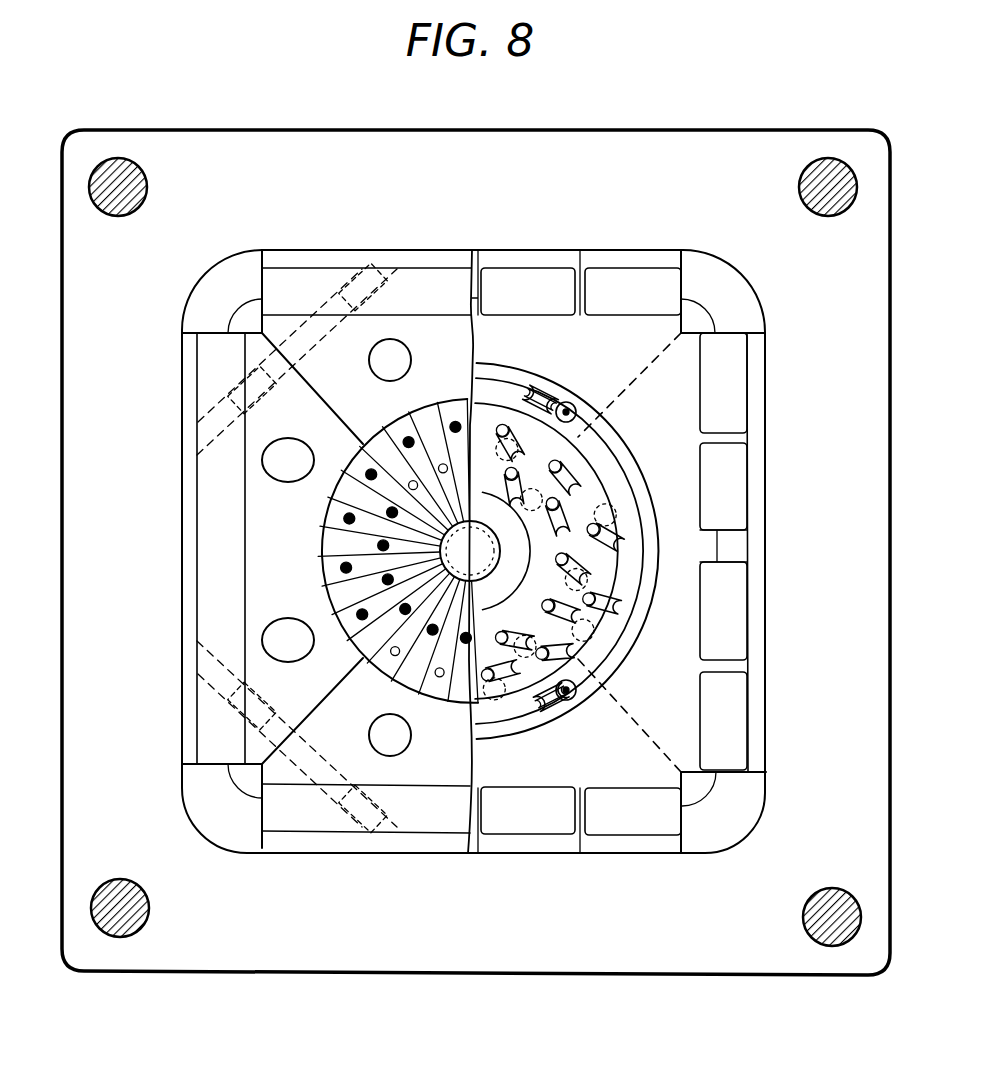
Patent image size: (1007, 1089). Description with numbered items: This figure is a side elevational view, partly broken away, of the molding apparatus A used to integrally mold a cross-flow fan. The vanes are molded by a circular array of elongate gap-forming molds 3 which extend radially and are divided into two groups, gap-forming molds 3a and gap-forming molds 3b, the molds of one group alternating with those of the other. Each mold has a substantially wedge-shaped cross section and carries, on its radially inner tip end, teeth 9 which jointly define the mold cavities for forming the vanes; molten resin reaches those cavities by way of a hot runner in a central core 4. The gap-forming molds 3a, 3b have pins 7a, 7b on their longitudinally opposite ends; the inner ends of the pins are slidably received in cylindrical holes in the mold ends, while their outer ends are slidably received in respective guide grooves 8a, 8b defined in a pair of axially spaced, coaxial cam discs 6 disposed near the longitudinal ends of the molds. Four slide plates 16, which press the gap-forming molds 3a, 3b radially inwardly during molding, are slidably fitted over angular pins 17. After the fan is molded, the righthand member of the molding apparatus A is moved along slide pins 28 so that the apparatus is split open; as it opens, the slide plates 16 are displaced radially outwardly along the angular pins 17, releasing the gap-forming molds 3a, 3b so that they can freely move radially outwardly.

The molding apparatus A is at (730, 102).
The slide pins 28 is at (120, 158).
The slide plates 16 is at (262, 433).
The angular pins 17 is at (273, 463).
The gap-forming molds 3 is at (438, 402).
The gap-forming molds 3a is at (346, 546).
The gap-forming molds 3b is at (350, 572).
The teeth 9 is at (470, 551).
The central core 4 is at (552, 498).
The cam discs 6 is at (602, 508).
The pins 7a is at (548, 622).
The pins 7b is at (582, 586).
The guide grooves 8a is at (598, 551).
The guide grooves 8b is at (578, 672).